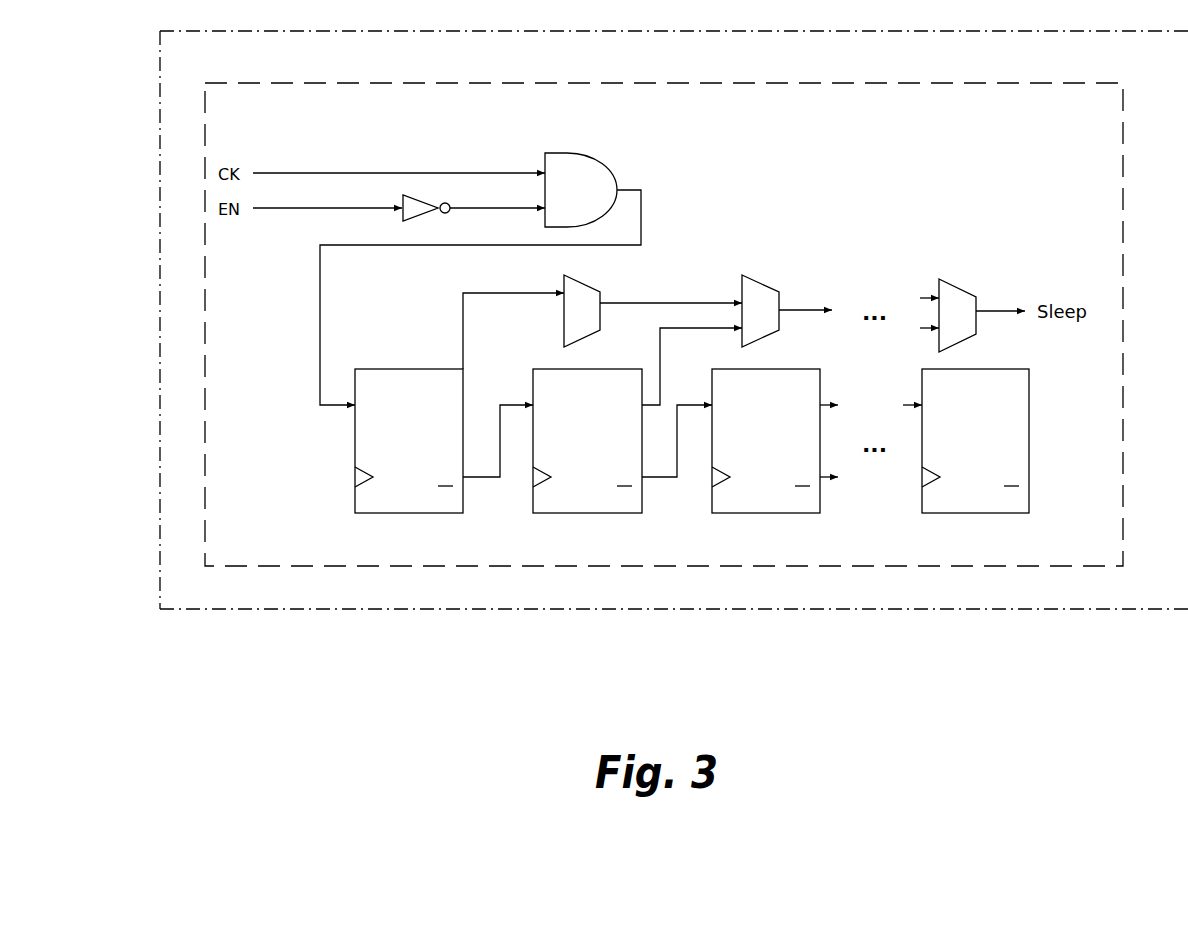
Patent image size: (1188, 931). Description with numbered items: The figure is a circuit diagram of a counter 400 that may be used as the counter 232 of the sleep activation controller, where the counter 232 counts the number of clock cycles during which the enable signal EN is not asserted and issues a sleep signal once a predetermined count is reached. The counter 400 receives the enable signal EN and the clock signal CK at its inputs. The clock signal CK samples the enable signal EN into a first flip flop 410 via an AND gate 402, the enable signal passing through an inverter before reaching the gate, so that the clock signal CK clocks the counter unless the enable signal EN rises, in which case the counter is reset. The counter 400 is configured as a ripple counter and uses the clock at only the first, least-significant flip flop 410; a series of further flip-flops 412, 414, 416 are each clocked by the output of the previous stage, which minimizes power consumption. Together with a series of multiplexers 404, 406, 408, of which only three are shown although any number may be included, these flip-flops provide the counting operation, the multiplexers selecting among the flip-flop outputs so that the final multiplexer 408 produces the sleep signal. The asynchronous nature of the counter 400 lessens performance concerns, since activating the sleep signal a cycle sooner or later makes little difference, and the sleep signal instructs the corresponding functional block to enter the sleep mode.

The counter 232 is at (1172, 72).
The counter 400 is at (1101, 126).
The AND gate 402 is at (604, 162).
The multiplexer 404 is at (601, 292).
The multiplexer 406 is at (768, 286).
The multiplexer 408 is at (962, 288).
The flip flop 410 is at (408, 513).
The flip-flop 412 is at (588, 513).
The flip-flop 414 is at (766, 513).
The flip-flop 416 is at (975, 513).